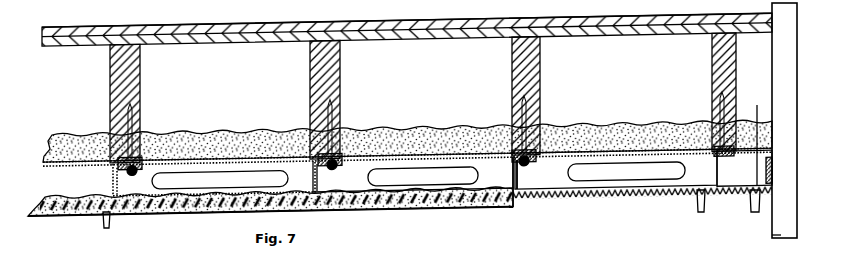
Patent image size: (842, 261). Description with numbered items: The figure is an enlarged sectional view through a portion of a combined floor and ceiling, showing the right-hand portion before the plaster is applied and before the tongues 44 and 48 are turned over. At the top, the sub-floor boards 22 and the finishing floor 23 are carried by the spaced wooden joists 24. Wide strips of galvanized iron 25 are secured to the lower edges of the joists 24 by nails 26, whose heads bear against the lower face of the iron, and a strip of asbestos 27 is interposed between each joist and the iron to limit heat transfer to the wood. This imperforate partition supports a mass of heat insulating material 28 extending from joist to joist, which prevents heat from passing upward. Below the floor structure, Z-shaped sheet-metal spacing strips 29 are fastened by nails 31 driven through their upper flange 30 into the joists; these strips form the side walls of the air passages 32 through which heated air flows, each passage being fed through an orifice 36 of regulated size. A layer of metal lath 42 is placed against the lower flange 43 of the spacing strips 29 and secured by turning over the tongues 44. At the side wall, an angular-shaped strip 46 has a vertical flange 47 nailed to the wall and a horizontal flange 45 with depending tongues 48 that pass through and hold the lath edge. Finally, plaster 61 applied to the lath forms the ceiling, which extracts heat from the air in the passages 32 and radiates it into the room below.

The sub-floor boards 22 is at (476, 41).
The finishing floor 23 is at (455, 18).
The joists 24 is at (341, 68).
The strips of galvanized iron 25 is at (567, 152).
The nails 26 is at (532, 147).
The strip of asbestos 27 is at (508, 148).
The heat insulating material 28 is at (200, 130).
The spacing strips 29 is at (518, 182).
The upper flange 30 is at (537, 160).
The nails 31 is at (538, 120).
The air passages 32 is at (340, 183).
The orifice 36 is at (637, 175).
The metal lath 42 is at (67, 214).
The lower flange 43 is at (497, 209).
The tongues 44 is at (110, 225).
The horizontal flange 45 is at (768, 192).
The angular-shaped strip 46 is at (760, 137).
The vertical flange 47 is at (774, 168).
The tongues 48 is at (753, 213).
The plaster 61 is at (373, 209).